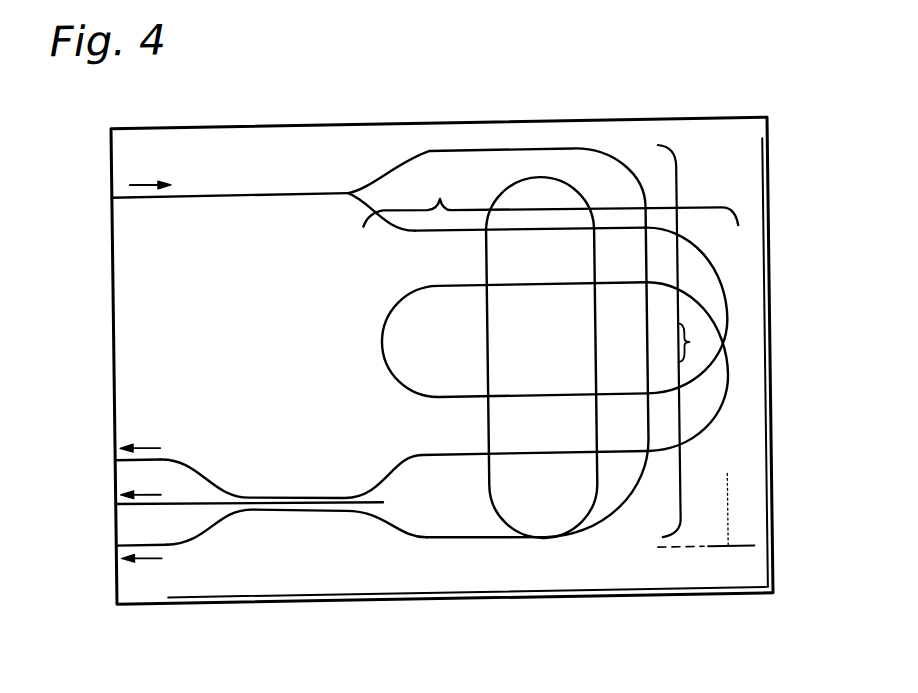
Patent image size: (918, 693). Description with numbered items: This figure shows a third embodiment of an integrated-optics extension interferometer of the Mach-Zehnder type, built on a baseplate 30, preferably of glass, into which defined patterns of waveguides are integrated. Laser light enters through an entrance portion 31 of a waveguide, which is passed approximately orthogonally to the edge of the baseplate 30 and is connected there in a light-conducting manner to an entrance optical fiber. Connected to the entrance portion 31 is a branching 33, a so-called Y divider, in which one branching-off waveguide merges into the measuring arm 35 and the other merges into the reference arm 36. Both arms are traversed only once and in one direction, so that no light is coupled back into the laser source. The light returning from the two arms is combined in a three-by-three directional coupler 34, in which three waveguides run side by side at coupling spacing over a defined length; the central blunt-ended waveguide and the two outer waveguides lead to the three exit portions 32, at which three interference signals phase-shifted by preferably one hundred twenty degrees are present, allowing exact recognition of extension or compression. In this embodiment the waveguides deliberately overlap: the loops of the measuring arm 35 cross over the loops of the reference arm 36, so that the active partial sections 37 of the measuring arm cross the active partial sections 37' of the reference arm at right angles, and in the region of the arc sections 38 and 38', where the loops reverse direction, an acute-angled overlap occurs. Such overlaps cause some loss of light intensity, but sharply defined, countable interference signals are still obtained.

The baseplate 30 is at (183, 355).
The entrance portion 31 is at (196, 195).
The exit portions 32 is at (166, 544).
The branching 33 is at (350, 185).
The 3×3 directional coupler 34 is at (289, 508).
The measuring arm 35 is at (700, 342).
The reference arm 36 is at (551, 196).
The active partial sections of the measuring arm 37 is at (532, 341).
The active partial sections of the reference arm 37' is at (436, 343).
The arc section 38 is at (543, 357).
The arc section 38' is at (568, 340).